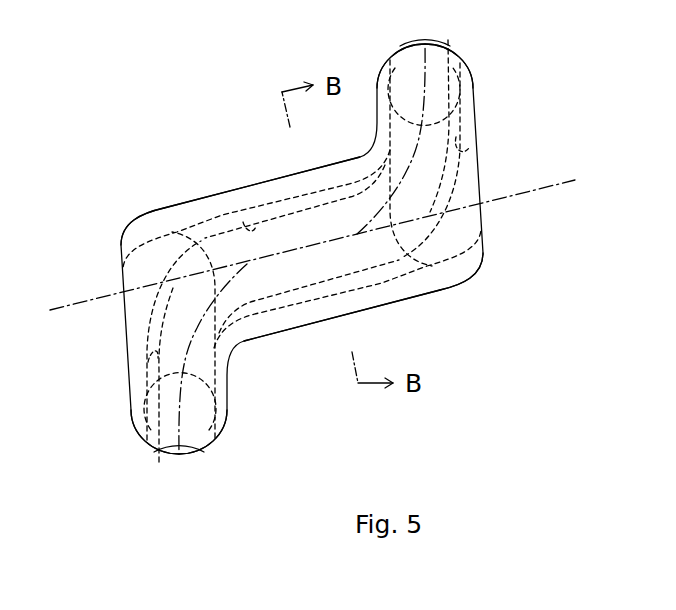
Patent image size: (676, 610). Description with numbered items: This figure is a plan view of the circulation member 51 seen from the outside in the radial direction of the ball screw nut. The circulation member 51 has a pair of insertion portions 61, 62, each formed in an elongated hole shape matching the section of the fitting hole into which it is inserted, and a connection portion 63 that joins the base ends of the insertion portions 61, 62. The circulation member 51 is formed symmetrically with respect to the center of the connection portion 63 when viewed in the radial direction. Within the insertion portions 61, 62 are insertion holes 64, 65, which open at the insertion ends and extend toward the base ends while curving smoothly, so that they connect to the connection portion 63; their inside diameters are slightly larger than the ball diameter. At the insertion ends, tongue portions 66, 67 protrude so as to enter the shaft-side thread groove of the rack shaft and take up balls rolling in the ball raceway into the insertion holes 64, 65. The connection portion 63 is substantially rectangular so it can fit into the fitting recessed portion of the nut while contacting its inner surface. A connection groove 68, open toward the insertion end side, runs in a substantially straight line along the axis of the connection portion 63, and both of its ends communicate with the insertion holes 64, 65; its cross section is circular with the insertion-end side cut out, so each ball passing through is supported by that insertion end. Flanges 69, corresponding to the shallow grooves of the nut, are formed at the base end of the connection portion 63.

The circulation member 51 is at (96, 108).
The insertion portion 61 is at (472, 62).
The insertion portion 62 is at (133, 425).
The connection portion 63 is at (366, 291).
The insertion hole 64 is at (478, 139).
The insertion hole 65 is at (137, 363).
The tongue portion 66 is at (431, 29).
The tongue portion 67 is at (159, 462).
The connection groove 68 is at (247, 220).
The flange 69 is at (180, 200).